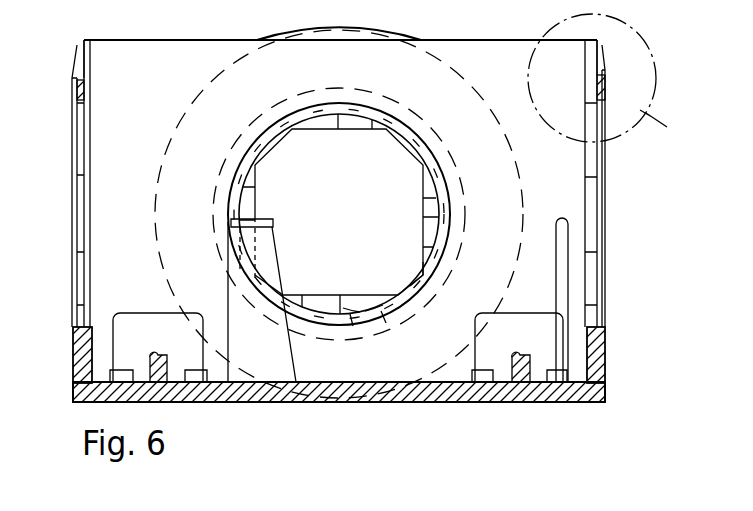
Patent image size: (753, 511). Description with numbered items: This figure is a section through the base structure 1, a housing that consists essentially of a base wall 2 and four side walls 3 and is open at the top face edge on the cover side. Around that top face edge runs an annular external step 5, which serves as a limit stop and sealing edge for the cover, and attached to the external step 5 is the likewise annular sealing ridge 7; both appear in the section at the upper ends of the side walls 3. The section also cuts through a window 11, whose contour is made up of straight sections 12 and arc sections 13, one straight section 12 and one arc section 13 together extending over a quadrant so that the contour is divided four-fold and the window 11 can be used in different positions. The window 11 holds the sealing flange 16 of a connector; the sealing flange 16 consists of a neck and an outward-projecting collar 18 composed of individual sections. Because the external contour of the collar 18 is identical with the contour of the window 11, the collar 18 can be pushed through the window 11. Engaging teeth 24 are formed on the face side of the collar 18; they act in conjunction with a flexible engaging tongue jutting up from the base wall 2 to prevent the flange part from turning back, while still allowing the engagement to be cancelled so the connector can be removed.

The base structure 1 is at (290, 403).
The base wall 2 is at (443, 401).
The side walls 3 is at (70, 355).
The external step 5 is at (600, 82).
The sealing ridge 7 is at (90, 60).
The window 11 is at (380, 325).
The straight sections 12 is at (420, 281).
The arc sections 13 is at (351, 327).
The sealing flange 16 is at (452, 195).
The collar 18 is at (414, 132).
The engaging teeth 24 is at (257, 205).